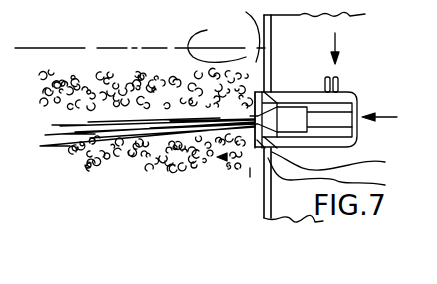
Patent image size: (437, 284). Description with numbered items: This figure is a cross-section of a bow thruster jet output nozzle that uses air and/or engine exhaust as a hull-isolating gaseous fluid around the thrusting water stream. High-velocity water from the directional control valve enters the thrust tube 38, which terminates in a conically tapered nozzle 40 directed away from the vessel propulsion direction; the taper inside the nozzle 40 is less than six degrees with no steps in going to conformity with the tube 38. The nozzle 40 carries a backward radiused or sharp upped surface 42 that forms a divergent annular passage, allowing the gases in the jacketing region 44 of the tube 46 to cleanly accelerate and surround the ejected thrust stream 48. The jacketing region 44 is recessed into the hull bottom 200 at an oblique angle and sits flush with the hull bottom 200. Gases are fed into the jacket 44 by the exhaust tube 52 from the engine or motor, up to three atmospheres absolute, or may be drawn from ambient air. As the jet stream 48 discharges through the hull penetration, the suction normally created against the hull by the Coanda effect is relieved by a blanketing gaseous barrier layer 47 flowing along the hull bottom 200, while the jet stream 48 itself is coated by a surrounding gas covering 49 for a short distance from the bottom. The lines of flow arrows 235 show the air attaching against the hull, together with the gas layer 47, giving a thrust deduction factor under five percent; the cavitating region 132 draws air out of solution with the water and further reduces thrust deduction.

The thrust tube 38 is at (352, 112).
The conically tapered nozzle 40 is at (342, 178).
The backward radiused or sharp upped surface 42 is at (225, 157).
The jacketing region 44 is at (292, 92).
The tube 46 is at (344, 164).
The blanketing gaseous barrier layer 47 is at (207, 162).
The thrust stream 48 is at (88, 122).
The blanketing air and/or gas covering 49 is at (155, 104).
The exhaust tube 52 is at (340, 80).
The cavitating region 132 is at (219, 42).
The hull bottom 200 is at (265, 197).
The lines of flow arrows 235 is at (234, 31).